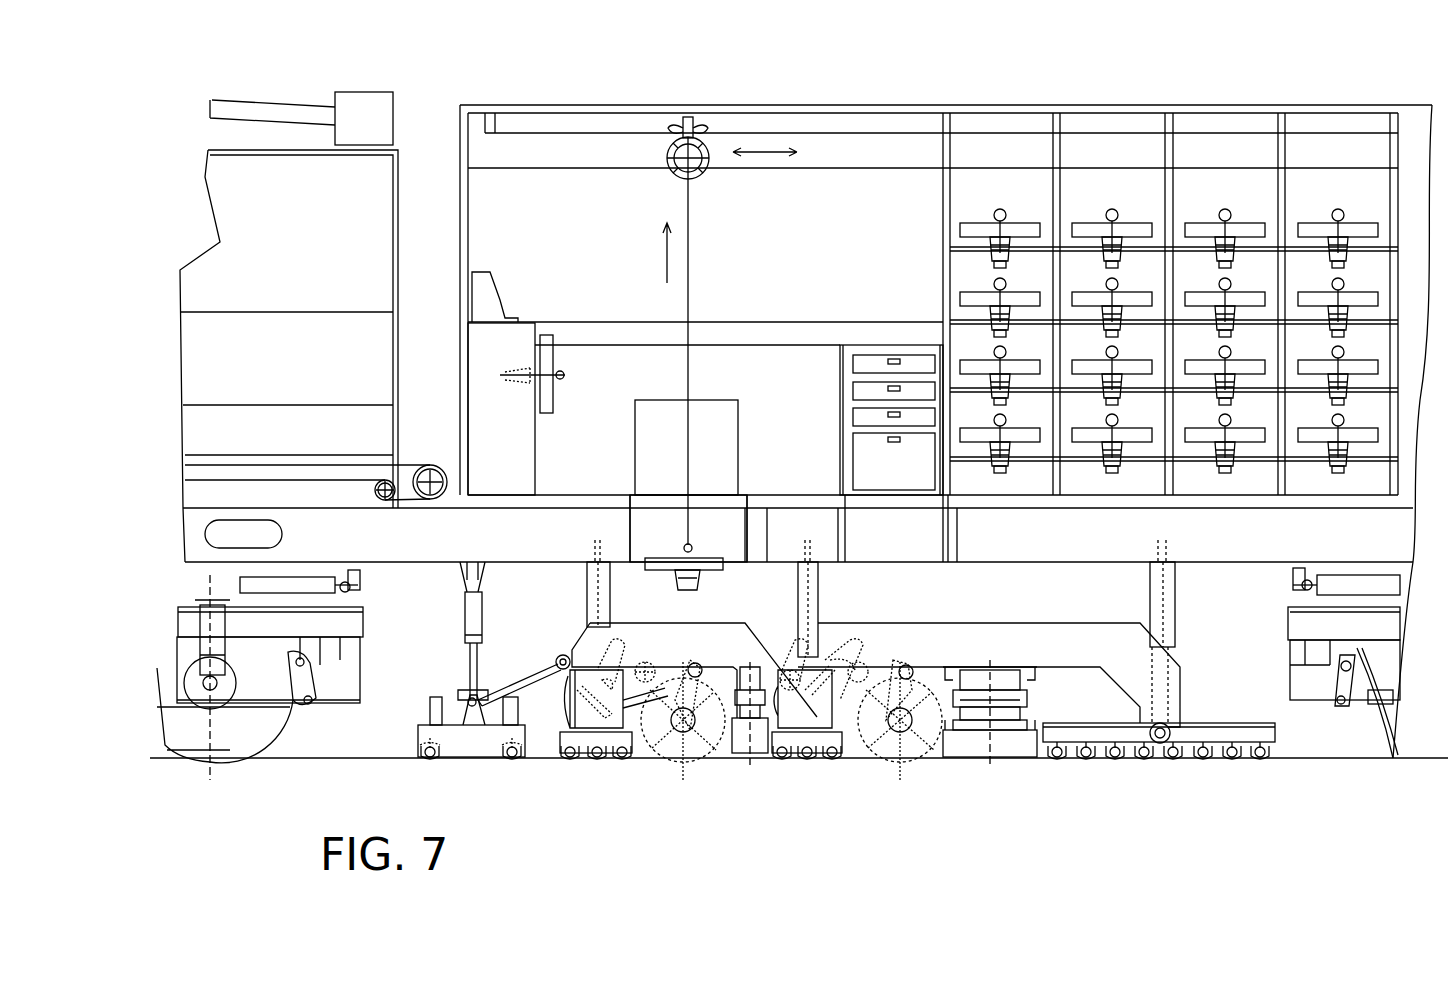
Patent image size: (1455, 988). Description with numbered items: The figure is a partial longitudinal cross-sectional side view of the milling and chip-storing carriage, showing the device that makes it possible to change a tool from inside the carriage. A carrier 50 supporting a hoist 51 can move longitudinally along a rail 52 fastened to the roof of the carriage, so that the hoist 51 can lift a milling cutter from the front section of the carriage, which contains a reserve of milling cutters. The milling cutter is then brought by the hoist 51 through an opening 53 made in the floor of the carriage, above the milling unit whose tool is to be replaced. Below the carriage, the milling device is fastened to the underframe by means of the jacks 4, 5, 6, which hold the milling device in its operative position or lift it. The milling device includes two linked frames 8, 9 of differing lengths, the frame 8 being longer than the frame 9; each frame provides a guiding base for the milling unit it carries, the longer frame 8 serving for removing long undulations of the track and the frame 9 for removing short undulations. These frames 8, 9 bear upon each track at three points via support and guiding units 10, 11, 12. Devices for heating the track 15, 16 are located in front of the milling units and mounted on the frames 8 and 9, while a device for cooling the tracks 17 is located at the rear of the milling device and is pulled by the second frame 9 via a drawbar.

The jack 4 is at (1168, 604).
The jack 5 is at (817, 603).
The jack 6 is at (593, 605).
The frame 8 is at (1073, 650).
The frame 9 is at (706, 640).
The support and guiding unit 10 is at (1103, 743).
The support and guiding unit 11 is at (793, 743).
The support and guiding unit 12 is at (583, 743).
The track heating device 15 is at (1008, 743).
The track heating device 16 is at (742, 743).
The track cooling device 17 is at (475, 743).
The carrier 50 is at (712, 305).
The hoist 51 is at (702, 172).
The rail 52 is at (843, 130).
The opening 53 is at (716, 513).